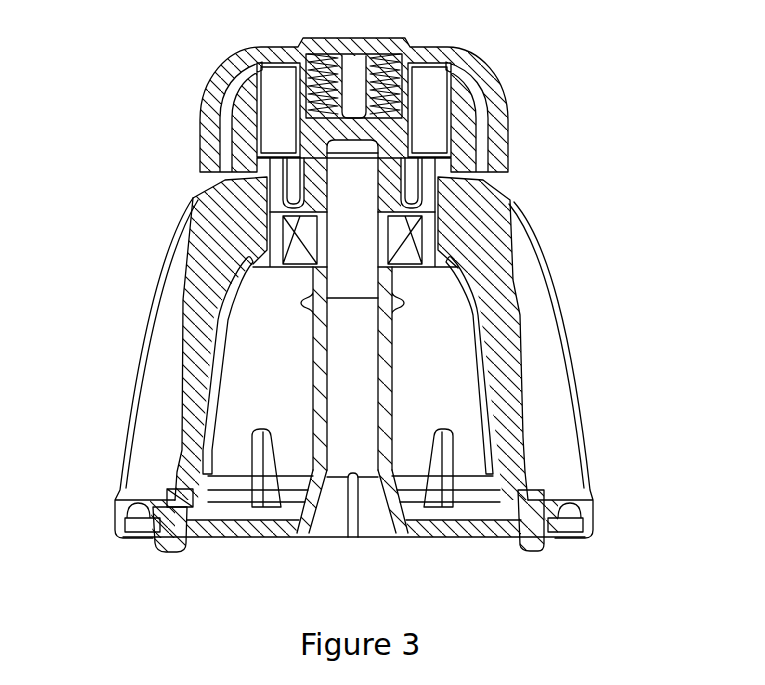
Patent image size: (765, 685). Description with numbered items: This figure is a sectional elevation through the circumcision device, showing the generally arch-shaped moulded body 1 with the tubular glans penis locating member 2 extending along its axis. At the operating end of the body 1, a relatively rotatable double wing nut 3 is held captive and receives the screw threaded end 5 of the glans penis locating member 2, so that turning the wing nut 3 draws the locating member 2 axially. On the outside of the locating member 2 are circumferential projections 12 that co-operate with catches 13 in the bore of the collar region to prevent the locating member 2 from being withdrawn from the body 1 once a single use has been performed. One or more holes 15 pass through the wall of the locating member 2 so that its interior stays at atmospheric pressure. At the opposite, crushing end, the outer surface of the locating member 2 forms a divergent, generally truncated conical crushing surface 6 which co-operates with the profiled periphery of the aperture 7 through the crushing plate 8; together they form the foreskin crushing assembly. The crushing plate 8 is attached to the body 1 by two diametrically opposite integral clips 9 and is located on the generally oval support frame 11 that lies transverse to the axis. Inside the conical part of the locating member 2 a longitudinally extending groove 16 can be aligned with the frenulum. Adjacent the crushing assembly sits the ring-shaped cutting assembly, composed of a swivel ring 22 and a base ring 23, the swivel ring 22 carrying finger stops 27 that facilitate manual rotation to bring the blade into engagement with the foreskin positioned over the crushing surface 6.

The body 1 is at (502, 320).
The glans penis locating member 2 is at (360, 459).
The double wing nut 3 is at (445, 54).
The screw threaded end 5 is at (398, 104).
The crushing surface 6 is at (410, 505).
The aperture 7 is at (292, 523).
The crushing plate 8 is at (232, 526).
The integral clips 9 is at (543, 548).
The support frame 11 is at (583, 527).
The circumferential projections 12 is at (290, 183).
The catches 13 is at (290, 222).
The holes 15 is at (386, 332).
The longitudinally extending grooves 16 is at (352, 540).
The swivel ring 22 is at (205, 474).
The base ring 23 is at (172, 502).
The finger stops 27 is at (257, 452).